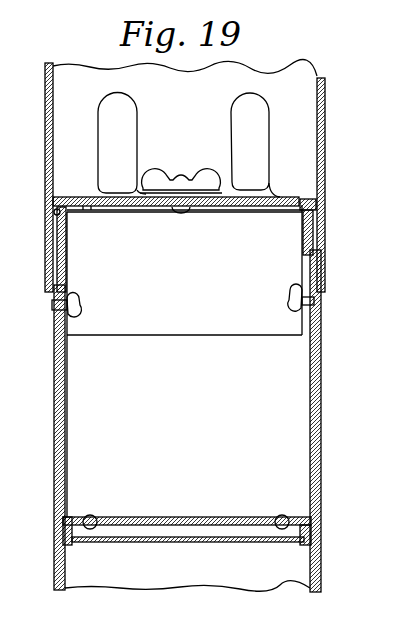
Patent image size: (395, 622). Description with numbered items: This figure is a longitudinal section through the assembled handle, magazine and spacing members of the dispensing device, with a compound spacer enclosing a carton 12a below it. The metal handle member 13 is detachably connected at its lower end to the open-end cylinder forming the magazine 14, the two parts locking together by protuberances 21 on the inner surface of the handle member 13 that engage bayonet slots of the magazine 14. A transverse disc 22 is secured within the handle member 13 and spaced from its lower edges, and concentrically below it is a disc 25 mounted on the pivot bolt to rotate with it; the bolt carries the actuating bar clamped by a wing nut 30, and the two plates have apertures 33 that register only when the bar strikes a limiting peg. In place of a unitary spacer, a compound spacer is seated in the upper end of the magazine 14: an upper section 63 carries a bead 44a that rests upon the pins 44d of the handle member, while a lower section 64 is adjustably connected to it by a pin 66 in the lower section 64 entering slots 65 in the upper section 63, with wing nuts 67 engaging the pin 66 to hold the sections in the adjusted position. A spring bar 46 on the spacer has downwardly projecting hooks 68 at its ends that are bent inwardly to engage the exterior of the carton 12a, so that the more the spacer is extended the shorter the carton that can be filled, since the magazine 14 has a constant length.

The handle member 13 is at (324, 155).
The transverse disc 22 is at (285, 196).
The disc 25 is at (262, 208).
The wing nut 30 is at (157, 170).
The apertures 33 is at (87, 210).
The upper section 63 is at (68, 250).
The slots 65 is at (70, 279).
The lower section 64 is at (66, 418).
The pin 66 is at (53, 307).
The wing nuts 67 is at (82, 313).
The protuberances 21 is at (302, 273).
The beaded flange 44a is at (316, 215).
The pins 44d is at (314, 225).
The magazine 14 is at (323, 552).
The spring member 46 is at (177, 517).
The hooks 68 is at (318, 535).
The carton 12a is at (313, 571).